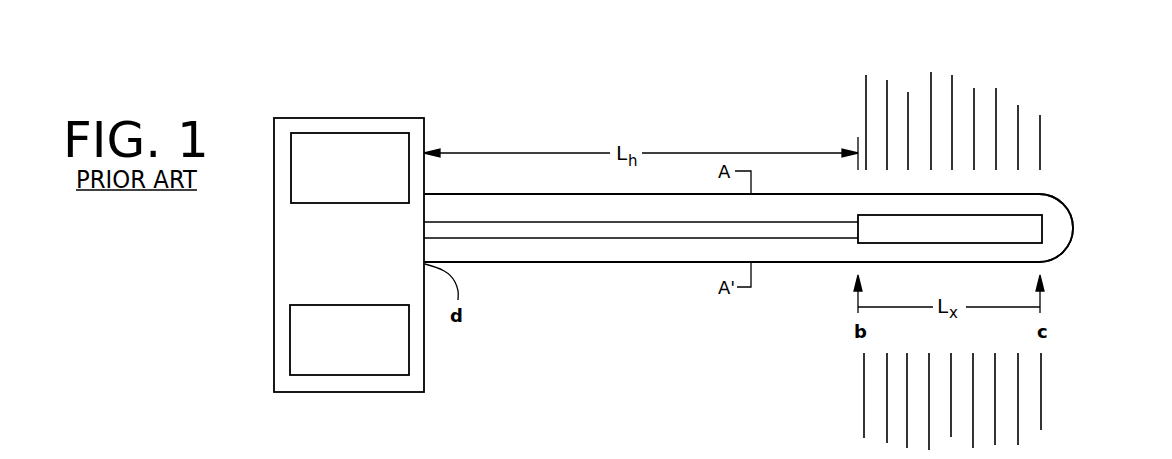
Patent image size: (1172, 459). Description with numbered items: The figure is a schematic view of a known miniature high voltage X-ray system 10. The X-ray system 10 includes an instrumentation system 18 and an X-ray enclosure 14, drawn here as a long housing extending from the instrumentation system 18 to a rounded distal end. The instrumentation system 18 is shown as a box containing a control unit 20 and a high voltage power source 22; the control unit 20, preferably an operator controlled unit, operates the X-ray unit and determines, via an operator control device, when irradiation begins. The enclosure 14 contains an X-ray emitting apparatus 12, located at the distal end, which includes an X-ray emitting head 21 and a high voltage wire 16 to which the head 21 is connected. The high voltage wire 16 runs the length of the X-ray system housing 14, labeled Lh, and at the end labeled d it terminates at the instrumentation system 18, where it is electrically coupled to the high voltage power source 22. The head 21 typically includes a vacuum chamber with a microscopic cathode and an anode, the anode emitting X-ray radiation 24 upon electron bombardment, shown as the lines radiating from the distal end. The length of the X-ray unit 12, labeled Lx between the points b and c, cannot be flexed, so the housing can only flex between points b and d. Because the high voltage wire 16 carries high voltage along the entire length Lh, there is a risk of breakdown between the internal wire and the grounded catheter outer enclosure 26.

The high voltage X-ray system 10 is at (627, 115).
The X-ray emitting apparatus 12 is at (1043, 222).
The X-ray enclosure 14 is at (642, 277).
The high voltage wire 16 is at (527, 228).
The instrumentation system 18 is at (274, 258).
The control unit 20 is at (357, 305).
The X-ray emitting head 21 is at (1075, 188).
The high voltage power source 22 is at (332, 203).
The X-ray radiation 24 is at (1008, 110).
The catheter outer enclosure 26 is at (520, 263).